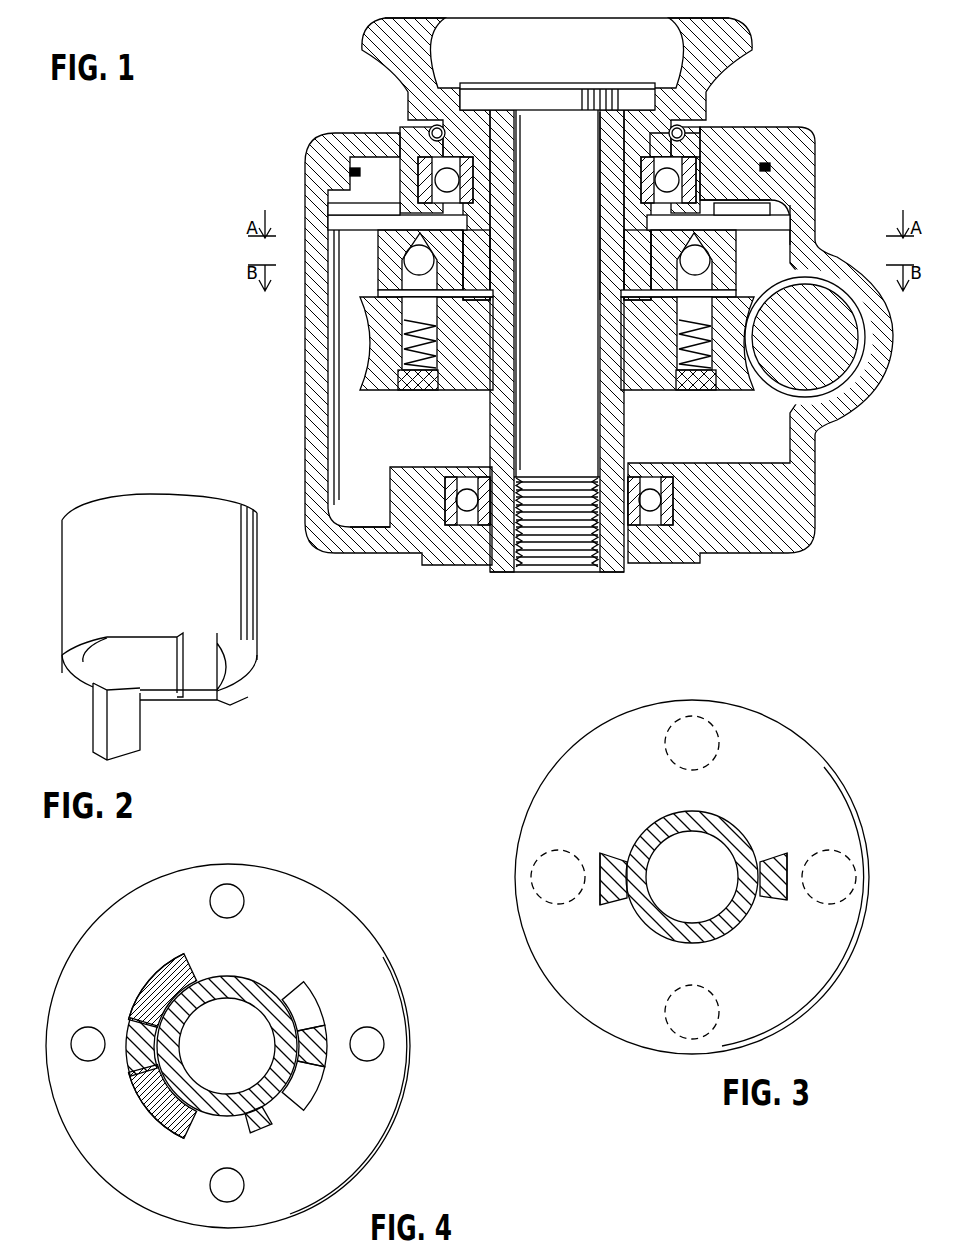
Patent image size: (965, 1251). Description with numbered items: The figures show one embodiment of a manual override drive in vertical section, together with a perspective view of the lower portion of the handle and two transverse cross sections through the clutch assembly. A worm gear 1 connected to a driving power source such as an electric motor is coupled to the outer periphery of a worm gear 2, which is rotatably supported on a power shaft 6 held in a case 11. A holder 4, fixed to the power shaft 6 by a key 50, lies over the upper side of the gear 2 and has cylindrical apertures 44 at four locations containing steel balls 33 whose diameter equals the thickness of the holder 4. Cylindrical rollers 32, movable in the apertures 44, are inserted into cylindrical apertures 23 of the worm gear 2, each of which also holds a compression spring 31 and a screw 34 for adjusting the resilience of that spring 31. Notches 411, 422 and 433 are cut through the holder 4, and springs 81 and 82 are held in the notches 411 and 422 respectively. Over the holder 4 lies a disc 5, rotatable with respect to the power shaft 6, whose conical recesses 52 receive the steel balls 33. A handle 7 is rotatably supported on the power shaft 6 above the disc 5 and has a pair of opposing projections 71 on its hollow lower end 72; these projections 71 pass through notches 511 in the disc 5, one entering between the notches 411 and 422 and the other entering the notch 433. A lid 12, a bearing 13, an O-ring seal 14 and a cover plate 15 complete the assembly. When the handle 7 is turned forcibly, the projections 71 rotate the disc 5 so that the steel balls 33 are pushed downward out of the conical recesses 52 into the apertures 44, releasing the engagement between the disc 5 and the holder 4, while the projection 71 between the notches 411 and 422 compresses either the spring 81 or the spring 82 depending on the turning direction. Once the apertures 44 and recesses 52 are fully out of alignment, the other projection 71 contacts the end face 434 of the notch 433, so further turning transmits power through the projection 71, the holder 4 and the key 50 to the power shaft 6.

In FIG. 1, the worm gear 1 is at (792, 370).
In FIG. 1, the worm gear 2 is at (742, 377).
In FIG. 1, the holder 4 is at (735, 286).
In FIG. 4, the holder 4 is at (383, 950).
In FIG. 1, the disc 5 is at (725, 250).
In FIG. 3, the disc 5 is at (833, 823).
In FIG. 1, the power shaft 6 is at (514, 385).
In FIG. 3, the power shaft 6 is at (730, 823).
In FIG. 4, the power shaft 6 is at (253, 990).
In FIG. 1, the handle 7 is at (742, 38).
In FIG. 2, the handle 7 is at (228, 568).
In FIG. 1, the case 11 is at (797, 190).
In FIG. 1, the lid 12 is at (773, 143).
In FIG. 1, the bearing 13 is at (700, 170).
In FIG. 1, the O-ring seal 14 is at (770, 167).
In FIG. 1, the cover plate 15 is at (613, 83).
In FIG. 1, the cylindrical apertures 23 is at (440, 332).
In FIG. 1, the compression spring 31 is at (650, 355).
In FIG. 1, the cylindrical rollers 32 is at (398, 305).
In FIG. 1, the steel balls 33 is at (622, 257).
In FIG. 1, the screw 34 is at (692, 385).
In FIG. 1, the cylindrical apertures 44 is at (404, 262).
In FIG. 4, the cylindrical apertures 44 is at (385, 1040).
In FIG. 4, the key 50 is at (253, 1123).
In FIG. 1, the conical recesses 52 is at (713, 232).
In FIG. 3, the conical recesses 52 is at (850, 907).
In FIG. 1, the projections 71 is at (480, 263).
In FIG. 2, the projections 71 is at (117, 724).
In FIG. 3, the projections 71 is at (613, 903).
In FIG. 4, the projections 71 is at (132, 1027).
In FIG. 2, the hollow lower end 72 is at (77, 670).
In FIG. 4, the spring 81 is at (150, 973).
In FIG. 4, the spring 82 is at (140, 1103).
In FIG. 4, the notch 411 is at (183, 955).
In FIG. 4, the notch 422 is at (160, 1122).
In FIG. 4, the notch 433 is at (315, 1010).
In FIG. 4, the end face 434 is at (313, 1078).
In FIG. 3, the notches 511 is at (610, 857).